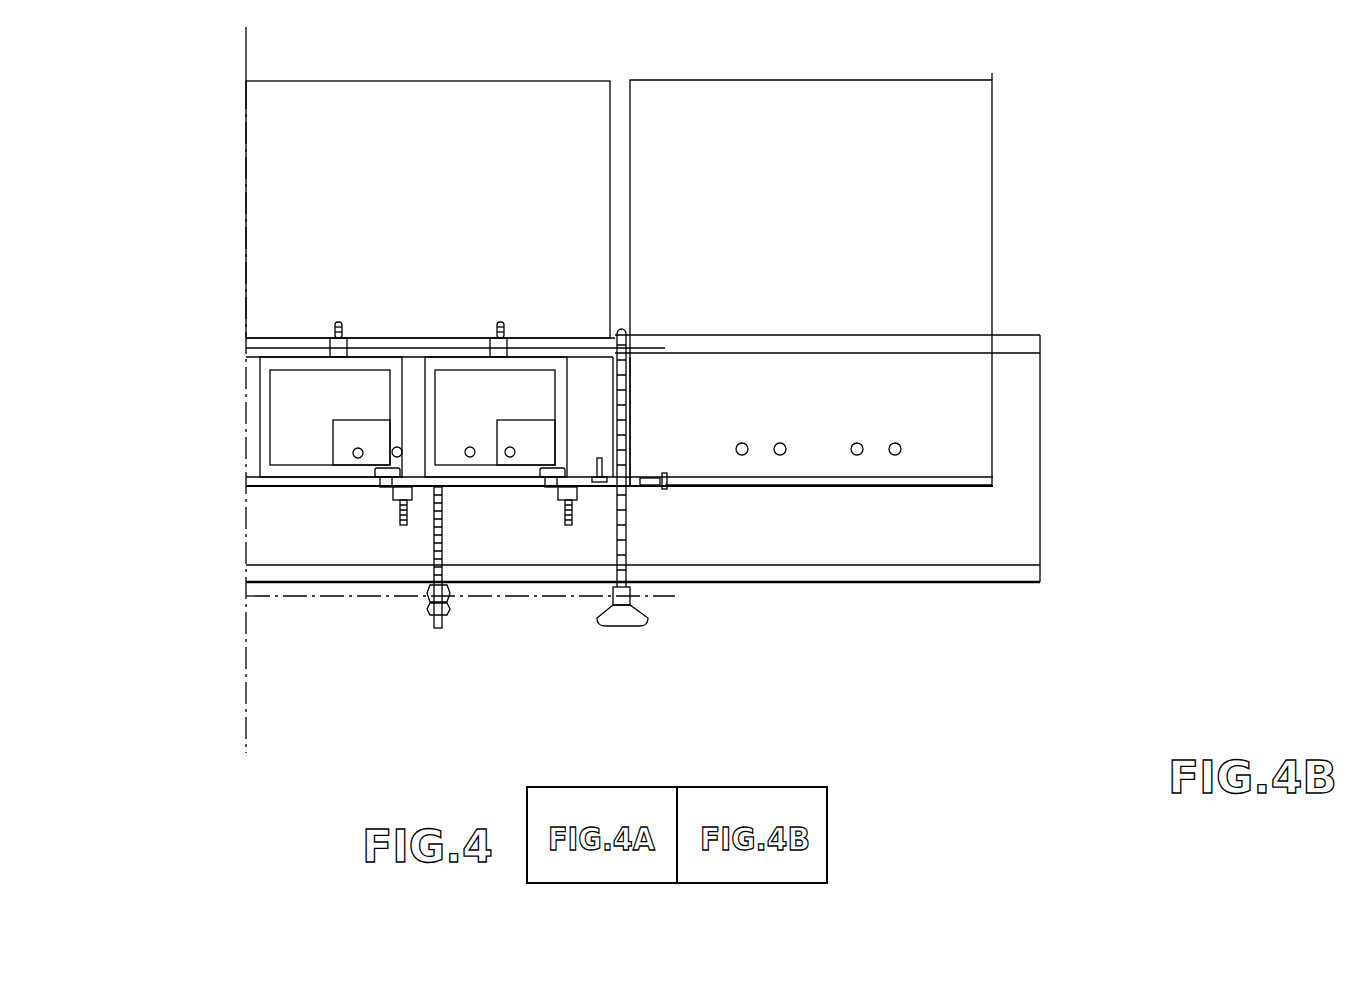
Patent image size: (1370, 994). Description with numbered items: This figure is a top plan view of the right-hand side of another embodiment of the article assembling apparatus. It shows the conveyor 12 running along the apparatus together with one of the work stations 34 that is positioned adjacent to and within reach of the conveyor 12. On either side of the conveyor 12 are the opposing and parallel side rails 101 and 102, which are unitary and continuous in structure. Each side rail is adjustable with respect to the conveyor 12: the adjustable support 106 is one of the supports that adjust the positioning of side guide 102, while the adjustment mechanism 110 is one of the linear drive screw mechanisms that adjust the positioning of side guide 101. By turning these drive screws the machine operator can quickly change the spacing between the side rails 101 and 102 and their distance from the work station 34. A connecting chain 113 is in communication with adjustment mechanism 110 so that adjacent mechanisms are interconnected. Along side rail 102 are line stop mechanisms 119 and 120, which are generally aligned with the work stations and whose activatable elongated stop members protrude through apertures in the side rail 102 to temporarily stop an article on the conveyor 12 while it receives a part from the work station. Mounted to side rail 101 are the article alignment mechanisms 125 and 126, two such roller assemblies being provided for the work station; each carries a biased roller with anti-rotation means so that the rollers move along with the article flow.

The work station 34 is at (440, 136).
The side rail 101 is at (278, 348).
The side rail 102 is at (312, 481).
The conveyor 12 is at (585, 377).
The article alignment mechanism 125 is at (355, 330).
The article alignment mechanism 126 is at (488, 326).
The line stop mechanism 119 is at (382, 503).
The line stop mechanism 120 is at (549, 505).
The adjustable support 106 is at (452, 532).
The adjustment mechanism 110 is at (655, 537).
The connecting chain 113 is at (540, 596).